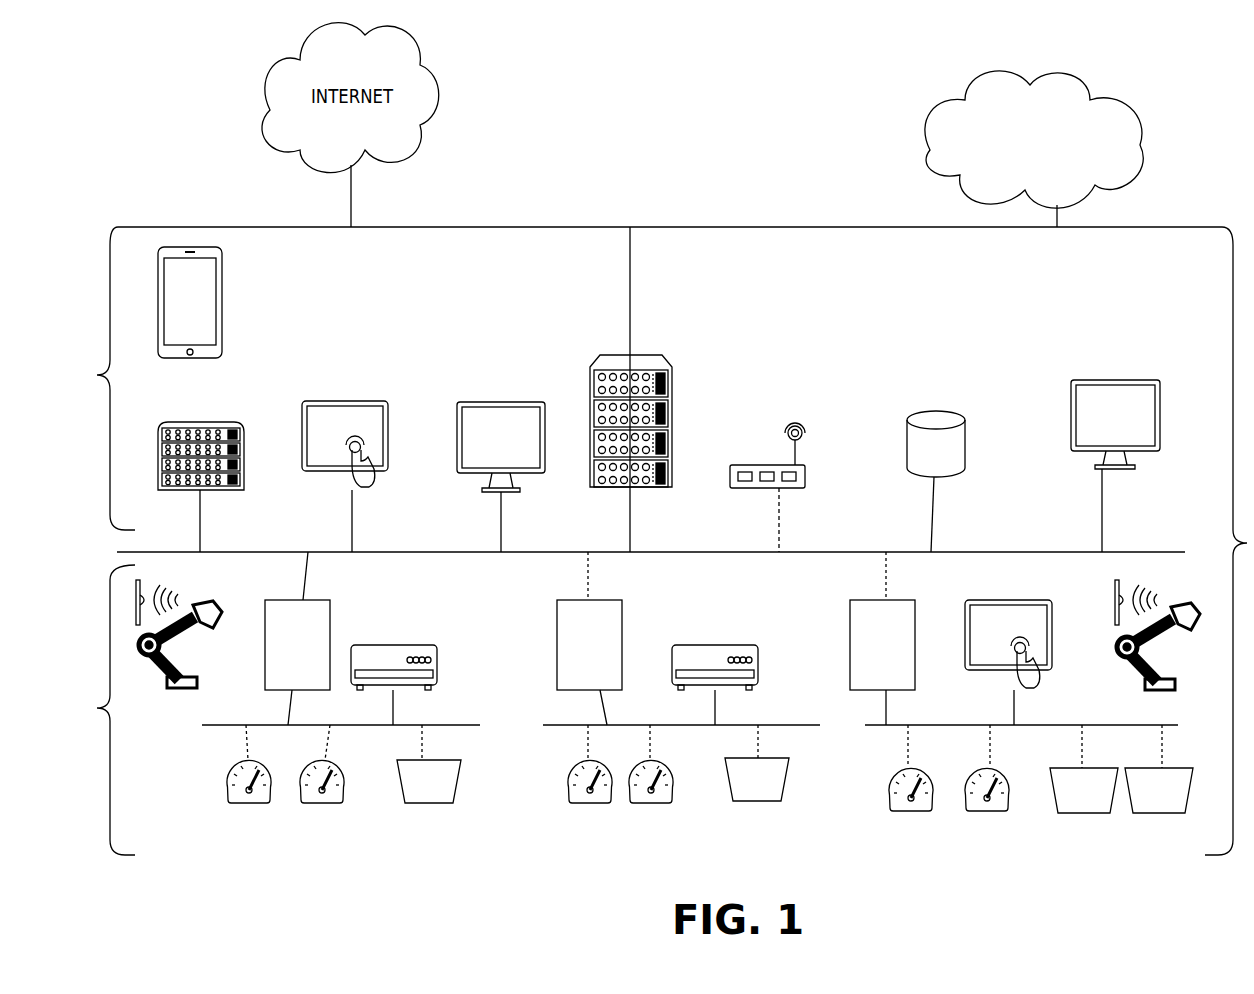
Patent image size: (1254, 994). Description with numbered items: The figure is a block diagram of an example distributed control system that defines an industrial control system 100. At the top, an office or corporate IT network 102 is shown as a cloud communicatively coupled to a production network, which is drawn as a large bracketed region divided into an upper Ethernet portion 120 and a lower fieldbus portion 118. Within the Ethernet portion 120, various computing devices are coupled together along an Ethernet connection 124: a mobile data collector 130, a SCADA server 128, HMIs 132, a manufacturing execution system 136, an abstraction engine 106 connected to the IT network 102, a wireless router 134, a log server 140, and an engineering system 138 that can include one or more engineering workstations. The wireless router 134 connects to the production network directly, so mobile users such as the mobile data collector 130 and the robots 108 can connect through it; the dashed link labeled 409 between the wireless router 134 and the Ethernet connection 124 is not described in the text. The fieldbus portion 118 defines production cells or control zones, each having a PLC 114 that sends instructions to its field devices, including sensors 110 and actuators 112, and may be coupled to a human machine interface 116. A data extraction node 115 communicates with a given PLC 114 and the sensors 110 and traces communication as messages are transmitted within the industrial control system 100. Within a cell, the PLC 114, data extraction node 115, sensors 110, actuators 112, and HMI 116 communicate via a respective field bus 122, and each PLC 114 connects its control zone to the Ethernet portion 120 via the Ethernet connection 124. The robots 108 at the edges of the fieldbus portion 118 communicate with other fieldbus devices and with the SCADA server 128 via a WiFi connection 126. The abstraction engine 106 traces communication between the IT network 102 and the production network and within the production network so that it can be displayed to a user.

The industrial control system 100 is at (880, 78).
The IT network 102 is at (1034, 149).
The abstraction engine 106 is at (675, 400).
The robots 108 is at (150, 660).
The sensors 110 is at (245, 803).
The actuators 112 is at (428, 803).
The PLC 114 is at (330, 617).
The data extraction node 115 is at (423, 656).
The human machine interface 116 is at (985, 617).
The fieldbus portion 118 is at (98, 710).
The Ethernet portion 120 is at (94, 387).
The field bus 122 is at (458, 725).
The Ethernet connection 124 is at (823, 552).
The WiFi connection 126 is at (135, 587).
The SCADA server 128 is at (178, 422).
The mobile data collector 130 is at (203, 290).
The HMIs 132 is at (300, 420).
The wireless router 134 is at (805, 425).
The manufacturing execution system 136 is at (470, 400).
The engineering system 138 is at (1115, 466).
The log server 140 is at (930, 437).
The network connection 409 is at (736, 520).